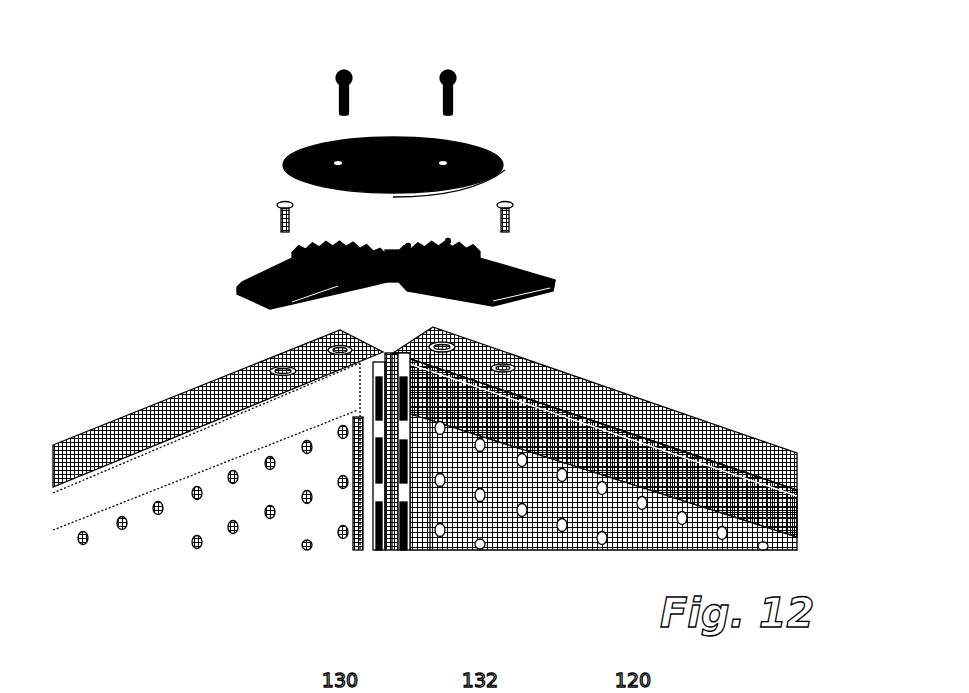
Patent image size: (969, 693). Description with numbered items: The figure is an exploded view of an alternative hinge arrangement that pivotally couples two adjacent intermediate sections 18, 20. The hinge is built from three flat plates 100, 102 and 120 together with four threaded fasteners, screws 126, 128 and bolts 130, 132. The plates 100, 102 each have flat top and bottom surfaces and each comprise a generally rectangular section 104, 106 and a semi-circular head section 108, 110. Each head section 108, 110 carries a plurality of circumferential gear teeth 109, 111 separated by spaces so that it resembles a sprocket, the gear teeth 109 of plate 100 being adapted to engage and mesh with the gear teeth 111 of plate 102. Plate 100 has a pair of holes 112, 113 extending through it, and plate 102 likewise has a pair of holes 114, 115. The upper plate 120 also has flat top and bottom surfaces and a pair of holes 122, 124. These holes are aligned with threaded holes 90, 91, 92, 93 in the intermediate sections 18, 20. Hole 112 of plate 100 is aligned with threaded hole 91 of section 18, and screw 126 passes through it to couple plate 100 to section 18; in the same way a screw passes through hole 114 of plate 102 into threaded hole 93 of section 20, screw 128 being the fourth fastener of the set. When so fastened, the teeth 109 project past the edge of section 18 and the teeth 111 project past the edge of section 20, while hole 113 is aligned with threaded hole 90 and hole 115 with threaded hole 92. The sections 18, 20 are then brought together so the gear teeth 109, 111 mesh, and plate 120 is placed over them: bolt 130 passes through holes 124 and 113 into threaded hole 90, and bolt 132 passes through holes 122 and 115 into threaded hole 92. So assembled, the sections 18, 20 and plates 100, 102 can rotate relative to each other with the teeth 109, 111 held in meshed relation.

The intermediate section 18 is at (202, 518).
The intermediate section 20 is at (544, 529).
The threaded hole 90 is at (338, 354).
The threaded hole 91 is at (279, 366).
The threaded hole 92 is at (445, 352).
The threaded hole 93 is at (506, 366).
The plate 100 is at (414, 248).
The plate 102 is at (582, 297).
The generally rectangular section 104 is at (243, 284).
The generally rectangular section 106 is at (557, 281).
The semi-circular head section 108 is at (384, 284).
The gear teeth 109 is at (328, 247).
The semi-circular head section 110 is at (425, 278).
The gear teeth 111 is at (408, 246).
The hole 112 is at (270, 270).
The hole 113 is at (338, 264).
The hole 114 is at (513, 272).
The hole 115 is at (448, 241).
The plate 120 is at (467, 113).
The hole 122 is at (467, 137).
The hole 124 is at (347, 153).
The screw 126 is at (278, 203).
The screw 128 is at (512, 203).
The bolt 130 is at (336, 75).
The bolt 132 is at (453, 70).